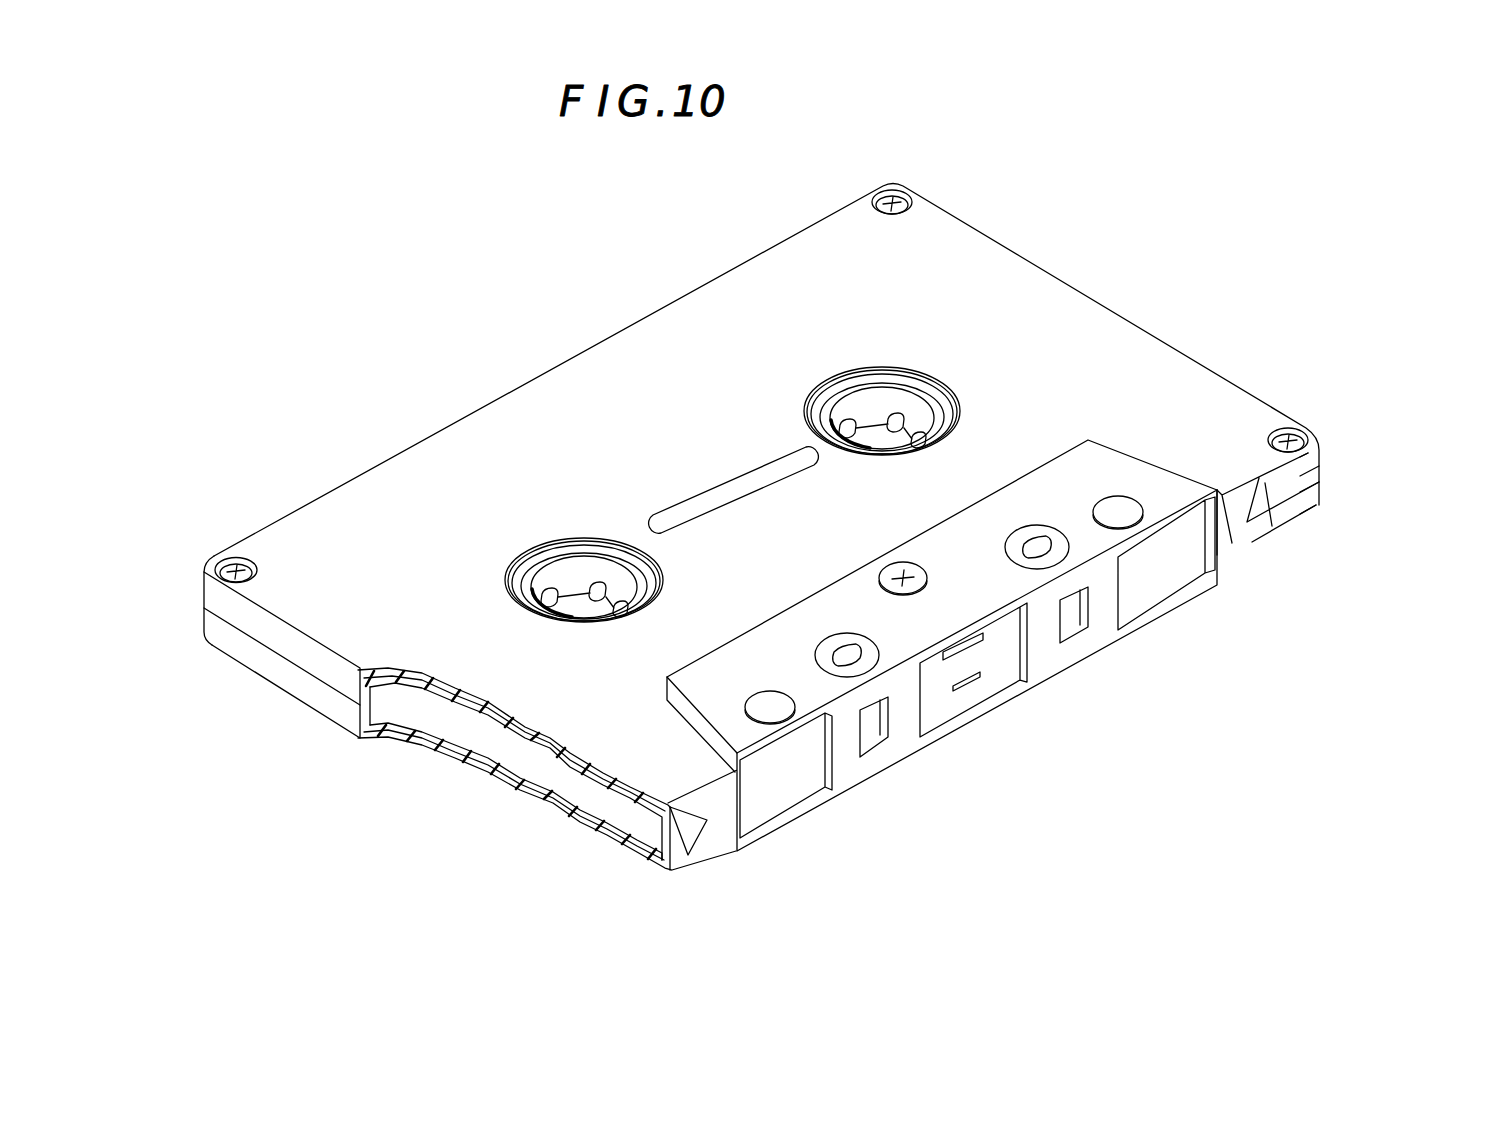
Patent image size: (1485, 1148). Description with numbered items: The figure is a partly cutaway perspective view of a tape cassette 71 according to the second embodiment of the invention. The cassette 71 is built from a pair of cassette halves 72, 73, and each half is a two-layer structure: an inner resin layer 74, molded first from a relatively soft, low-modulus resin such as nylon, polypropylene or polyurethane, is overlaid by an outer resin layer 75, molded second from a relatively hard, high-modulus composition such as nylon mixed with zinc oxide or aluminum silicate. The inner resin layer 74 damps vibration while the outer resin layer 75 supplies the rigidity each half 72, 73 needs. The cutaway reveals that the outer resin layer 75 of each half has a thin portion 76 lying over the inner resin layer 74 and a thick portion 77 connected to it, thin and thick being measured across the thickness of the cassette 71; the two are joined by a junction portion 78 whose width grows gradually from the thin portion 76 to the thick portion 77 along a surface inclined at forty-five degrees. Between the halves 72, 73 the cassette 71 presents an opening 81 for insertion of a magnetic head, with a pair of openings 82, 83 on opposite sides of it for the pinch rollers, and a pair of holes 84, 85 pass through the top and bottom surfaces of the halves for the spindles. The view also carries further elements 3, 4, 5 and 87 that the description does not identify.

The reel hub 3 is at (607, 573).
The reel hub 4 is at (920, 387).
The front lid / head insertion portion 5 is at (990, 657).
The tape cassette 71 is at (1386, 330).
The cassette half 72 is at (1324, 290).
The cassette half 73 is at (1316, 572).
The inner resin layer 74 is at (1313, 478).
The outer resin layer 75 is at (1266, 728).
The thin portion 76 is at (1287, 480).
The thick portion 77 is at (1222, 495).
The junction portion 78 is at (697, 797).
The opening 81 is at (920, 715).
The opening 82 is at (813, 793).
The opening 83 is at (1120, 610).
The hole 84 is at (562, 552).
The hole 85 is at (315, 653).
The hub ring 87 is at (922, 415).